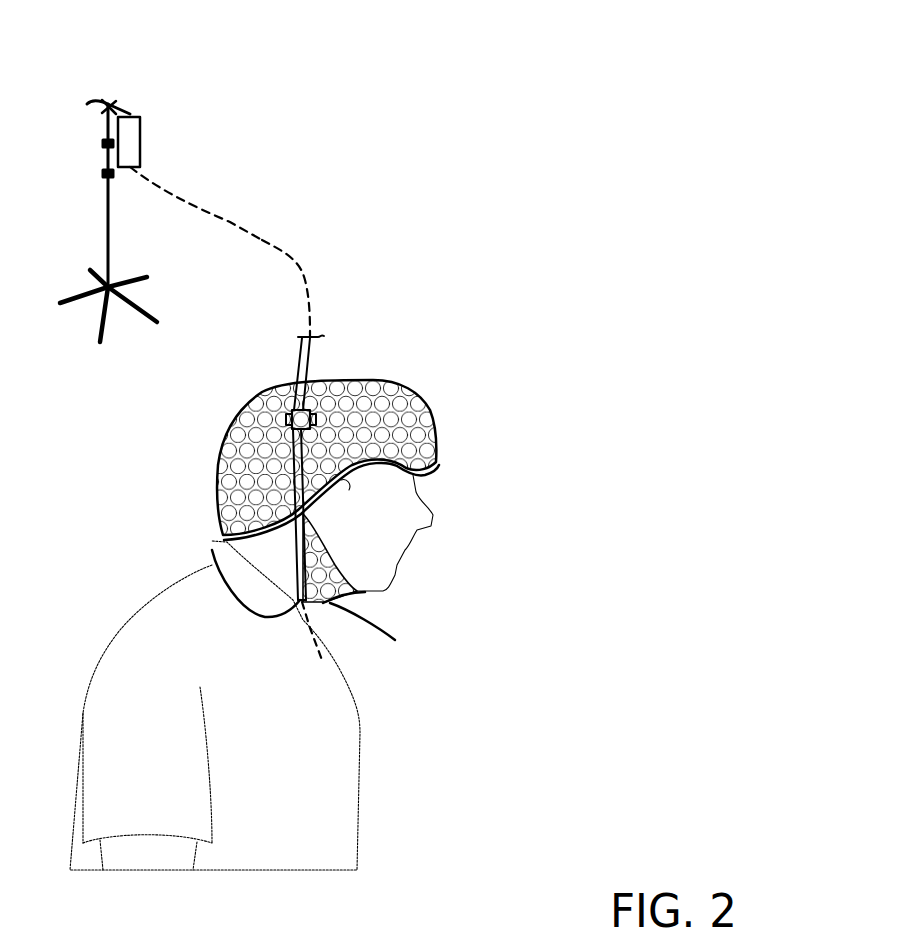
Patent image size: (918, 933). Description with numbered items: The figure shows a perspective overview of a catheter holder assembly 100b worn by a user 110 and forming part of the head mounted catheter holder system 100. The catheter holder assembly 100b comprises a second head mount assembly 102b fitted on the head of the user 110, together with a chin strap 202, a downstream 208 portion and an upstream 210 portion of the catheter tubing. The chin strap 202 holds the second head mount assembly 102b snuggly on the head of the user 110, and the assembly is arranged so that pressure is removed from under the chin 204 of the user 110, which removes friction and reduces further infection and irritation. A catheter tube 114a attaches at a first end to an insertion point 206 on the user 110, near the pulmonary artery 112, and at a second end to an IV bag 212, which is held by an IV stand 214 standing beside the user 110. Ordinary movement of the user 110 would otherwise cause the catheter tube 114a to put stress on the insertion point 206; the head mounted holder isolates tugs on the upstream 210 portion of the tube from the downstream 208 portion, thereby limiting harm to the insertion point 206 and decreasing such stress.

The IV stand 214 is at (92, 100).
The IV bag 212 is at (140, 137).
The upstream 210 is at (182, 203).
The catheter tube 114a is at (303, 273).
The catheter holder assembly 100b is at (371, 432).
The cooling system 100 is at (408, 432).
The second head mount assembly 102b is at (425, 407).
The downstream 208 is at (290, 506).
The insertion point 206 is at (212, 550).
The chin 204 is at (365, 592).
The chin strap 202 is at (395, 640).
The pulmonary artery 112 is at (308, 625).
The user 110 is at (357, 810).